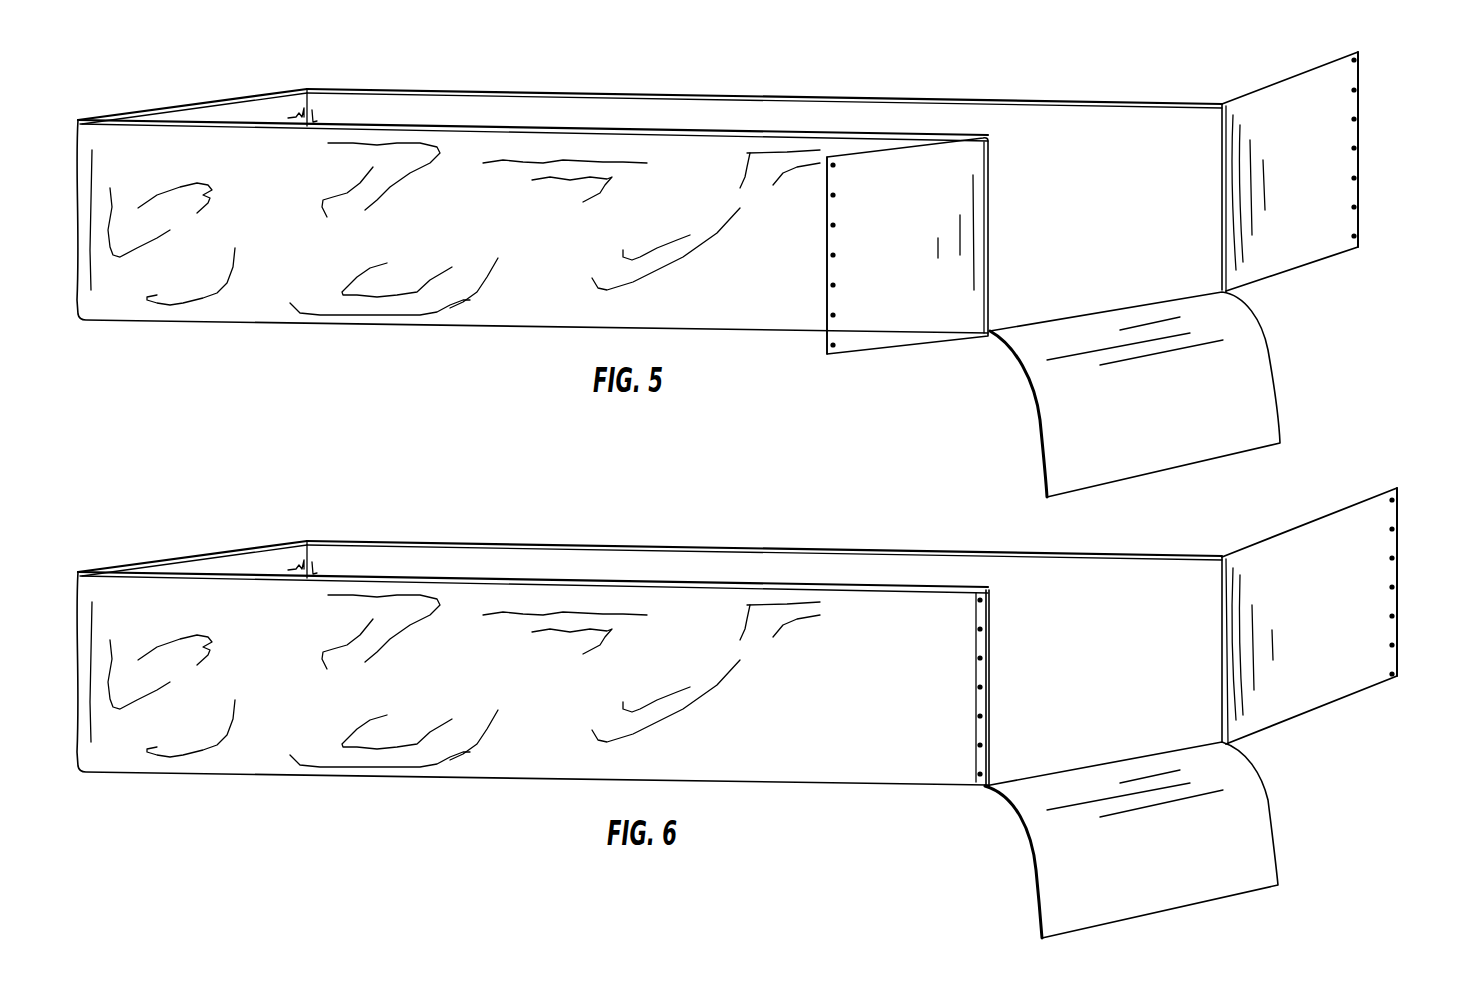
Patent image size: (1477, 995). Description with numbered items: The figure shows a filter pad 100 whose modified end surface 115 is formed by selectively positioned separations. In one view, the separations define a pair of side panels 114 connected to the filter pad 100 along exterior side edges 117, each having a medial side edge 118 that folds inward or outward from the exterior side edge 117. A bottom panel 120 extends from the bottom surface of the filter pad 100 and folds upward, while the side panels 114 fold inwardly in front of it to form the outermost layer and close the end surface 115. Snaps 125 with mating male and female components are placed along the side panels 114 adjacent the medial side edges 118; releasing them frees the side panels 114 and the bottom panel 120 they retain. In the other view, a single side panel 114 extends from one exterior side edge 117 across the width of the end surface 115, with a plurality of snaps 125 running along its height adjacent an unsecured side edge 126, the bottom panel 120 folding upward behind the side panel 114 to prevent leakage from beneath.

In FIG. 5, the filter pad 100 is at (455, 66).
In FIG. 6, the filter pad 100 is at (476, 517).
In FIG. 5, the side panel 114 is at (890, 333).
In FIG. 6, the side panel 114 is at (1310, 543).
In FIG. 5, the end surface 115 is at (1188, 274).
In FIG. 6, the end surface 115 is at (1107, 714).
In FIG. 5, the exterior side edge 117 is at (993, 190).
In FIG. 6, the exterior side edge 117 is at (1220, 592).
In FIG. 5, the medial side edge 118 is at (827, 187).
In FIG. 5, the bottom panel 120 is at (1173, 442).
In FIG. 6, the bottom panel 120 is at (1250, 840).
In FIG. 5, the snaps 125 is at (835, 195).
In FIG. 6, the snaps 125 is at (982, 658).
In FIG. 6, the unsecured side edge 126 is at (1398, 612).